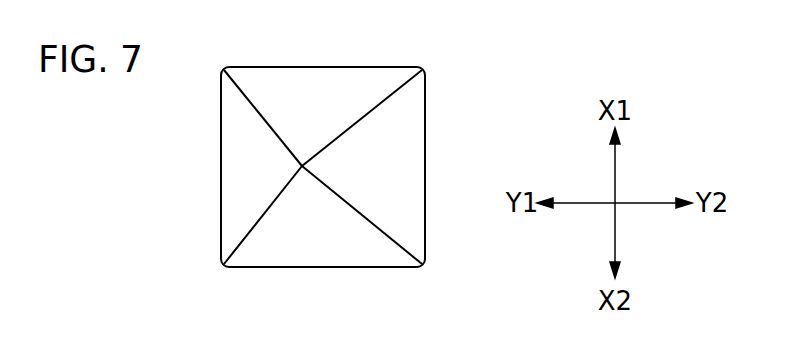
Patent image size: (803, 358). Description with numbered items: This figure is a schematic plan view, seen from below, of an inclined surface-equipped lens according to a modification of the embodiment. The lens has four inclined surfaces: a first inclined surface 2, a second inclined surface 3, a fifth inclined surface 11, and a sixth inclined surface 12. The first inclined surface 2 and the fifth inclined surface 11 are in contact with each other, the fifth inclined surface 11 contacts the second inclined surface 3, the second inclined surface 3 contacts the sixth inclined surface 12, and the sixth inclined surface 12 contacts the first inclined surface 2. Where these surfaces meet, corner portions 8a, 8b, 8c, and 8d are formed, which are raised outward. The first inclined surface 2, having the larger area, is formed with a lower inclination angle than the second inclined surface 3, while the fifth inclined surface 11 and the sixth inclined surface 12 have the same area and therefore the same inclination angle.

The first inclined surface 2 is at (410, 148).
The second inclined surface 3 is at (235, 168).
The corner portion 8a is at (372, 222).
The corner portion 8b is at (260, 223).
The corner portion 8c is at (258, 98).
The corner portion 8d is at (398, 94).
The fifth inclined surface 11 is at (275, 253).
The sixth inclined surface 12 is at (358, 82).